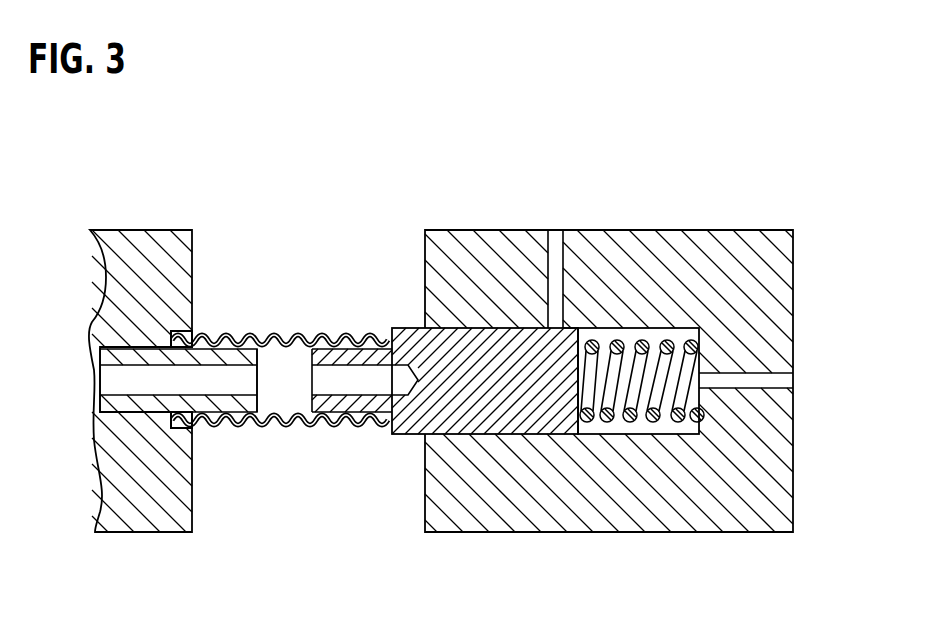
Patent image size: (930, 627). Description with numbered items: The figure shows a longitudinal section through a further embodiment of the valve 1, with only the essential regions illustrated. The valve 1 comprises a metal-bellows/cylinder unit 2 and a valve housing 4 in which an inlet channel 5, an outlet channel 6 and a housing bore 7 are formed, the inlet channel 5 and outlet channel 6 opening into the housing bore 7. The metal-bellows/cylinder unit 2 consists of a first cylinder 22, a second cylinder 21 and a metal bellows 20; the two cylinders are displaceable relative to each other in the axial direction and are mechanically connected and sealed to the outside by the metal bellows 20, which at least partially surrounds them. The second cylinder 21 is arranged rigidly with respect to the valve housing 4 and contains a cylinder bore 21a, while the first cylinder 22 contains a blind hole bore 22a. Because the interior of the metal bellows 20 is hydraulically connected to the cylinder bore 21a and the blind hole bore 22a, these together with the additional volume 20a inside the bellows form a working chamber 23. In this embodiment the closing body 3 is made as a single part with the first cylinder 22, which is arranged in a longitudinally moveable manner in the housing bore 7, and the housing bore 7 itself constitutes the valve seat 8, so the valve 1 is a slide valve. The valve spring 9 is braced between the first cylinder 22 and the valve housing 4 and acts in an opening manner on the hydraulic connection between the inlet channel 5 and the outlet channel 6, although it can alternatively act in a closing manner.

The valve 1 is at (76, 179).
The metal-bellows/cylinder unit 2 is at (287, 452).
The closing body 3 is at (432, 352).
The valve housing 4 is at (482, 272).
The inlet channel 5 is at (775, 382).
The outlet channel 6 is at (557, 245).
The housing bore 7 is at (640, 428).
The valve seat 8 is at (568, 332).
The valve spring 9 is at (665, 343).
The metal bellows 20 is at (278, 338).
The additional volume 20a is at (275, 385).
The second cylinder 21 is at (135, 297).
The cylinder bore 21a is at (135, 379).
The first cylinder 22 is at (485, 381).
The blind hole bore 22a is at (360, 386).
The working chamber 23 is at (237, 378).